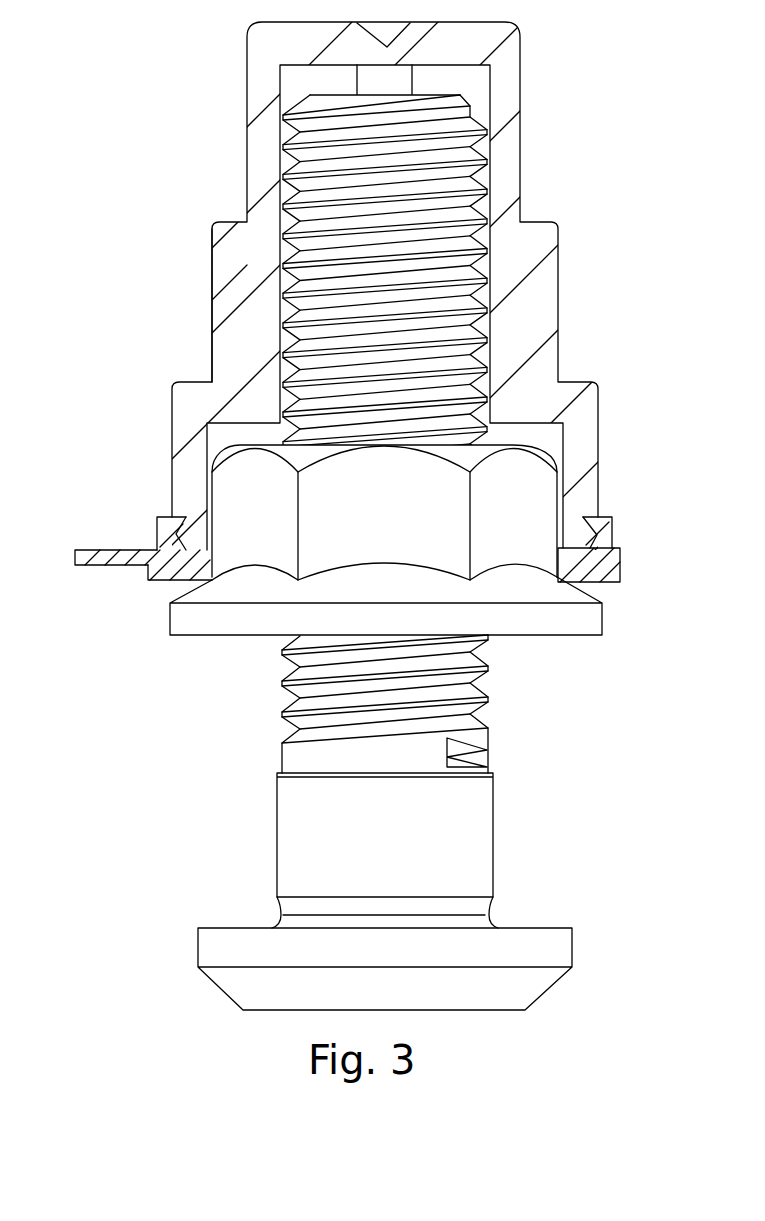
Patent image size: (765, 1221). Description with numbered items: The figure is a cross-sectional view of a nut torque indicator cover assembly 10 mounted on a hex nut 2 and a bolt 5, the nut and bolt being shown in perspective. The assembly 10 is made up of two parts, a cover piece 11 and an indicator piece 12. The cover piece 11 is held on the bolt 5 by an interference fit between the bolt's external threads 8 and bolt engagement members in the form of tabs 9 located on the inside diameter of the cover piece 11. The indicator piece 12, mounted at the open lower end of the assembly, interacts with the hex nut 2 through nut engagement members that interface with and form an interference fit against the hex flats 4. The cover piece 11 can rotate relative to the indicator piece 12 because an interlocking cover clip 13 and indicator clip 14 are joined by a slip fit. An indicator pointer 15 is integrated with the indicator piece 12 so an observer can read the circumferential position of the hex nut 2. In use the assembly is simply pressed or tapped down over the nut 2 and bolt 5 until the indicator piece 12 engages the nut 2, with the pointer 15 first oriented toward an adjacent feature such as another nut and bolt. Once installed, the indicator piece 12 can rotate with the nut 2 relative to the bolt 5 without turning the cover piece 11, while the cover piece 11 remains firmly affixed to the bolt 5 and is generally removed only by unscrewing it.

The hex nut 2 is at (193, 637).
The hex flats 4 is at (508, 532).
The bolt 5 is at (217, 928).
The external threads 8 is at (492, 205).
The tabs 9 is at (373, 82).
The nut torque indicator cover assembly 10 is at (523, 65).
The cover piece 11 is at (230, 290).
The indicator piece 12 is at (163, 573).
The cover clip 13 is at (200, 527).
The indicator clip 14 is at (173, 523).
The indicator pointer 15 is at (90, 557).